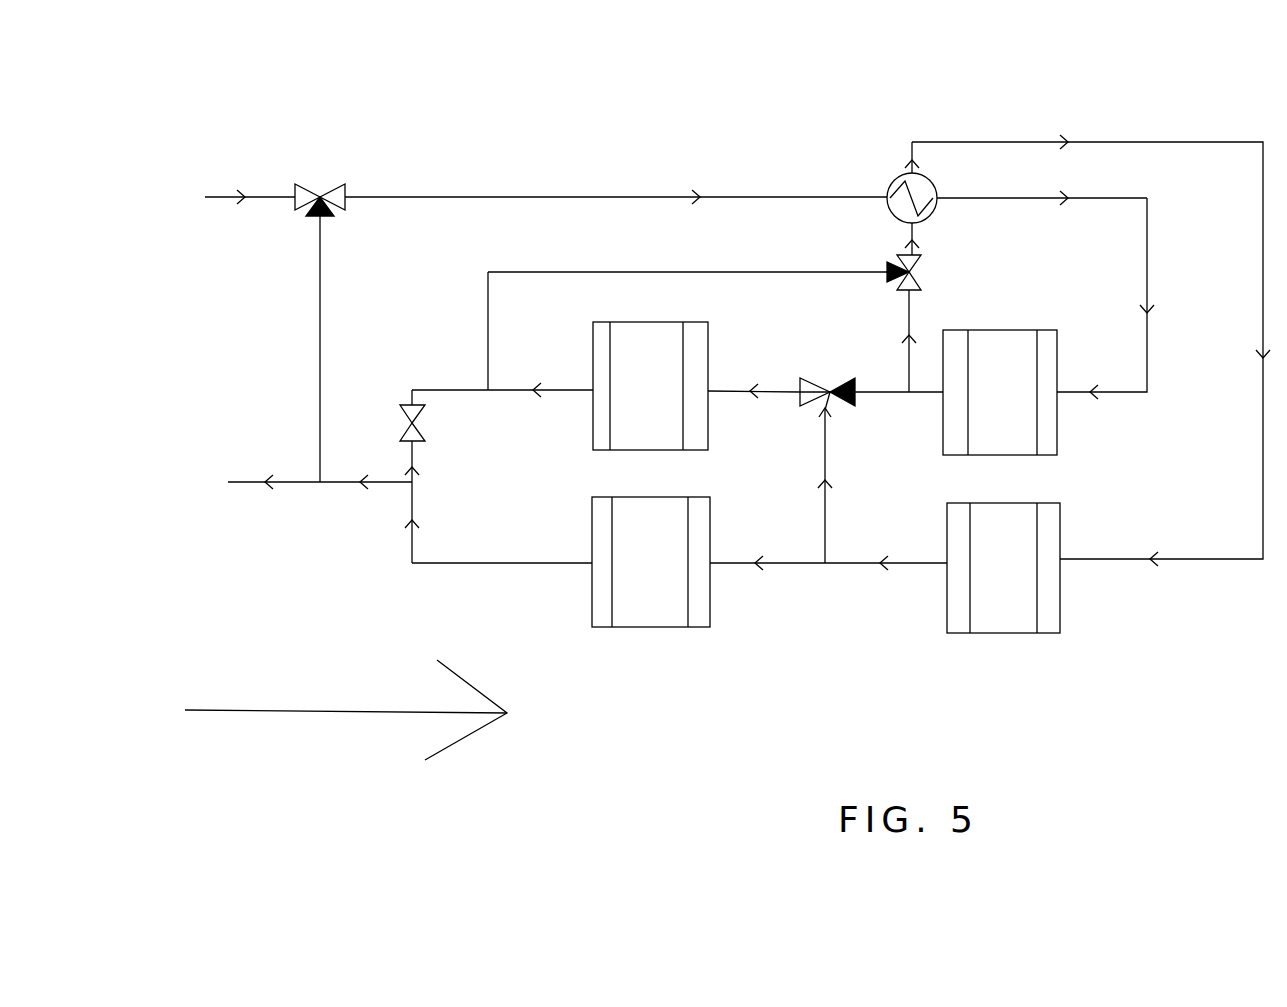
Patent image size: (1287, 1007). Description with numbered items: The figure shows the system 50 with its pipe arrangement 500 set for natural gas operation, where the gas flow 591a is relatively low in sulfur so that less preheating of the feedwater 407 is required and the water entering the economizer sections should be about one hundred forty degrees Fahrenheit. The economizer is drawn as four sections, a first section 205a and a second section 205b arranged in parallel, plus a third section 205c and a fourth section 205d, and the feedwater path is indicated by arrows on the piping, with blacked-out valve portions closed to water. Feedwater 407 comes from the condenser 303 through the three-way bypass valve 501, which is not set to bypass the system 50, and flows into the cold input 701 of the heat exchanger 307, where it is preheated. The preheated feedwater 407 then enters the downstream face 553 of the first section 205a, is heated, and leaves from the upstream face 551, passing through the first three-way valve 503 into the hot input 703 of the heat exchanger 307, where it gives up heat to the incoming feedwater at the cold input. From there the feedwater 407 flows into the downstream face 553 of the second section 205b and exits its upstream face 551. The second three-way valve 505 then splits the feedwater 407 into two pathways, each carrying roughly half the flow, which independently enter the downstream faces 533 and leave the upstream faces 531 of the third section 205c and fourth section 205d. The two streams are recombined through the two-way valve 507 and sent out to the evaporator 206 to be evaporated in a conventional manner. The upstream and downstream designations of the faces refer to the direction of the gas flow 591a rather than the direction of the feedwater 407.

The system 50 is at (760, 110).
The pipe arrangement 500 is at (1158, 141).
The bypass valve 501 is at (338, 188).
The first three-way valve 503 is at (922, 262).
The second three-way valve 505 is at (850, 420).
The two-way valve 507 is at (426, 428).
The feedwater 407 is at (550, 193).
The cold input 701 is at (892, 188).
The heat exchanger 307 is at (930, 186).
The hot input 703 is at (920, 226).
The first section of the economizer 205a is at (1000, 330).
The second section of the economizer 205b is at (1005, 506).
The third section of the economizer 205c is at (672, 322).
The fourth section of the economizer 205d is at (655, 627).
The upstream face 531 is at (598, 328).
The downstream face 533 is at (708, 450).
The upstream face 551 is at (955, 330).
The downstream face 553 is at (1045, 330).
The condenser 303 is at (203, 209).
The evaporator 206 is at (268, 493).
The gas flow 591a is at (346, 719).